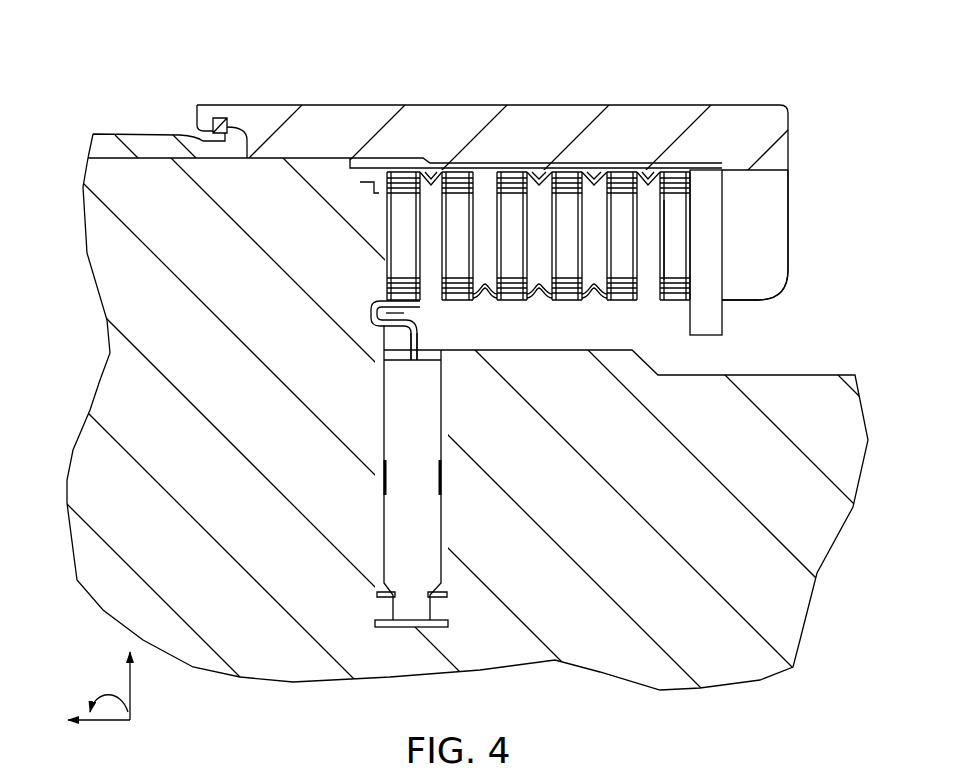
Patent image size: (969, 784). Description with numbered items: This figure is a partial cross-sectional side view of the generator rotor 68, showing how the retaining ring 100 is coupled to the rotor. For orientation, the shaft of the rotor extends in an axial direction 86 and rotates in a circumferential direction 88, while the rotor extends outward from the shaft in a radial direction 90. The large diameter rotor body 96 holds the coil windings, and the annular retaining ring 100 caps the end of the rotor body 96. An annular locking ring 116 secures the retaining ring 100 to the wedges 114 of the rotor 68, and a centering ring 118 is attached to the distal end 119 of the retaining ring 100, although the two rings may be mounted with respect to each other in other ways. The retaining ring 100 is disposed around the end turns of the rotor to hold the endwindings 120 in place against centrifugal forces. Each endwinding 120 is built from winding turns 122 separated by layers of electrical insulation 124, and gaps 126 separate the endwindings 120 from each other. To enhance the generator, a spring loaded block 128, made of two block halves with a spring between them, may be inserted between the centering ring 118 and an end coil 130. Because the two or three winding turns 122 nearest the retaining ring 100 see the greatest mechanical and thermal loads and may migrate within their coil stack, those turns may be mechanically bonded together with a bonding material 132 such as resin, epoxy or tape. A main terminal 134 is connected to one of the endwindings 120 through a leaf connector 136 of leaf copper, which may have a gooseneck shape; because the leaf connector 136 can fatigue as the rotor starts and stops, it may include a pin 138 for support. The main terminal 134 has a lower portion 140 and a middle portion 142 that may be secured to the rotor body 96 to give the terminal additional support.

The generator rotor 68 is at (140, 33).
The axial direction 86 is at (100, 735).
The circumferential direction 88 is at (131, 728).
The radial direction 90 is at (132, 690).
The rotor body 96 is at (273, 662).
The retaining ring 100 is at (345, 120).
The wedges 114 is at (148, 143).
The annular locking ring 116 is at (214, 125).
The centering ring 118 is at (790, 197).
The distal end 119 is at (800, 98).
The endwindings 120 is at (362, 293).
The winding turns 122 is at (482, 185).
The layers of electrical insulation 124 is at (487, 188).
The gaps 126 is at (645, 182).
The spring loaded block 128 is at (722, 348).
The end coil 130 is at (680, 228).
The bonding material 132 is at (362, 181).
The main terminal 134 is at (443, 477).
The leaf connector 136 is at (372, 332).
The pin 138 is at (405, 314).
The lower portion 140 is at (415, 604).
The middle portion 142 is at (405, 488).